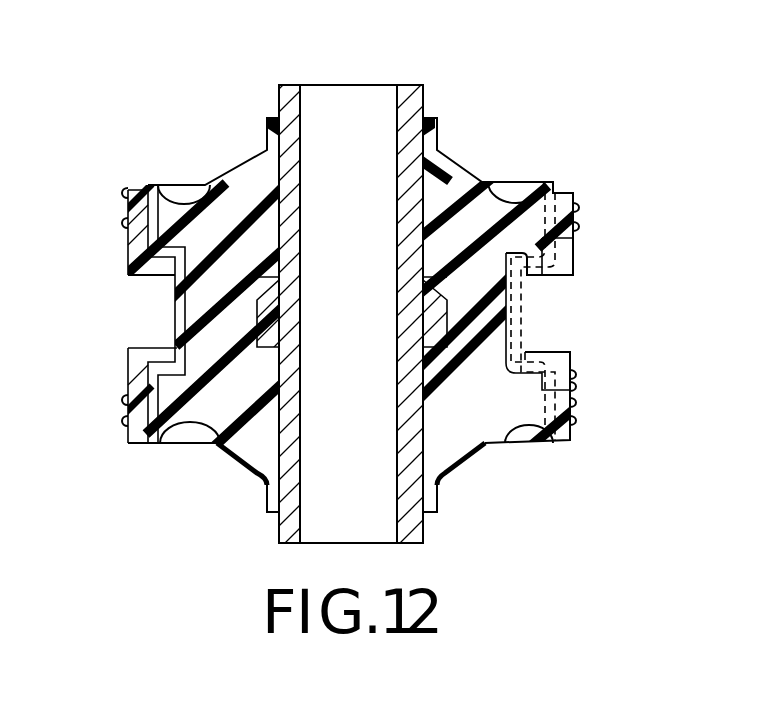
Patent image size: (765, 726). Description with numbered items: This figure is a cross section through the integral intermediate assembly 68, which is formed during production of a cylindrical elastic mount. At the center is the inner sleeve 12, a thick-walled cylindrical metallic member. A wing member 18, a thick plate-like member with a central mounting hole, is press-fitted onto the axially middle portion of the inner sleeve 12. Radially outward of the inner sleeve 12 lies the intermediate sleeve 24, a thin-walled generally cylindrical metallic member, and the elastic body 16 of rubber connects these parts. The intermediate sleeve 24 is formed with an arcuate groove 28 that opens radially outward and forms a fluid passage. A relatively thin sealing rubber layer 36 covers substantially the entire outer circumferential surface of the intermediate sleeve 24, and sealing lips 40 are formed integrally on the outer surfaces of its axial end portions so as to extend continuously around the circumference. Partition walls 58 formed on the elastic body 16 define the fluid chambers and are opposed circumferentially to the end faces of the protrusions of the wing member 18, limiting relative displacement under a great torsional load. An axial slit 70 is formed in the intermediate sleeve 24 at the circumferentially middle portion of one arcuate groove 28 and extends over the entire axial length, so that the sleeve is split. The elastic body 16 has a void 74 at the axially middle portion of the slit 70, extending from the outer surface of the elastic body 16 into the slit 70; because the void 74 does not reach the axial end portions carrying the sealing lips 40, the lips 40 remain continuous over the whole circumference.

The inner sleeve 12 is at (290, 528).
The elastic body 16 is at (230, 158).
The wing member 18 is at (265, 340).
The intermediate sleeve 24 is at (130, 442).
The arcuate groove 28 is at (183, 316).
The sealing rubber layer 36 is at (140, 242).
The sealing lips 40 is at (126, 193).
The partition walls 58 is at (210, 214).
The integral intermediate assembly 68 is at (158, 64).
The axial slit 70 is at (575, 375).
The void 74 is at (572, 268).